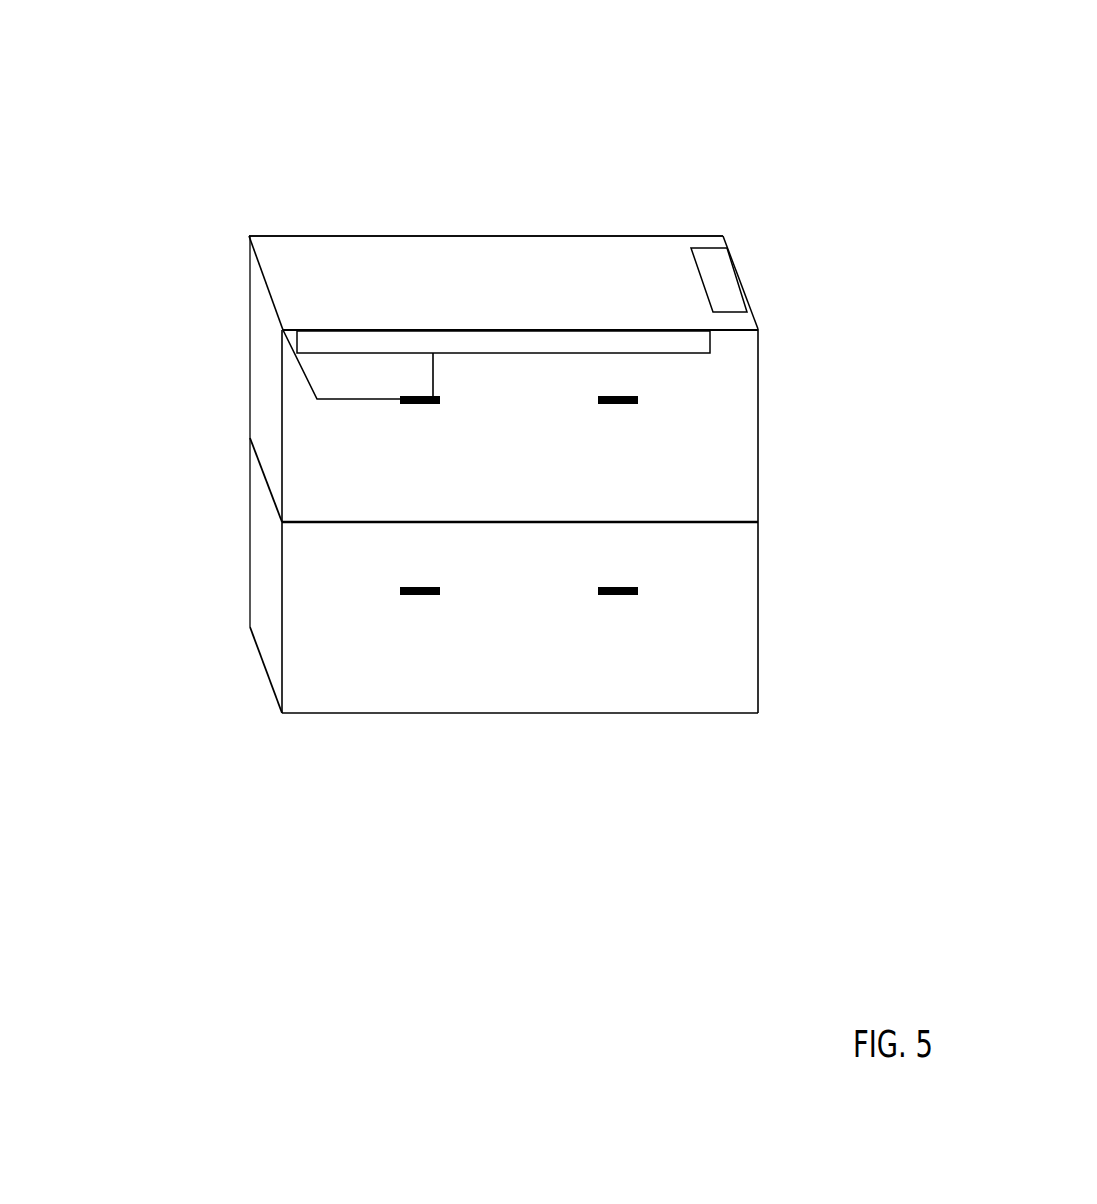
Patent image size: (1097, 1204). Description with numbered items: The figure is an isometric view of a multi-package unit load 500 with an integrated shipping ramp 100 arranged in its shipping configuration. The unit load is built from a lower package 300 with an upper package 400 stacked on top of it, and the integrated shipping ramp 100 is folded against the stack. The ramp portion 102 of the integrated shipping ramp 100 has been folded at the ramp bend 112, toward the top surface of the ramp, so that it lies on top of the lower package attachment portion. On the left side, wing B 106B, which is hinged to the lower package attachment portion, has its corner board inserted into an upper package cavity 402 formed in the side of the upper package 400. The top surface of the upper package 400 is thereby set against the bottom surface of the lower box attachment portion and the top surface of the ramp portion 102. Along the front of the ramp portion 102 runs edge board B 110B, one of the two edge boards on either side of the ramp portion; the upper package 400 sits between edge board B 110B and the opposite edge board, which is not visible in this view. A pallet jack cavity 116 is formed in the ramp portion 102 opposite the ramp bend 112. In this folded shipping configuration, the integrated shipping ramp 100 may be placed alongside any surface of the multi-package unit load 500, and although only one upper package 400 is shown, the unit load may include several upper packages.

The multi-package unit load 500 is at (960, 36).
The integrated shipping ramp 100 is at (352, 204).
The ramp portion 102 is at (536, 317).
The ramp bend 112 is at (190, 262).
The wing B 106B is at (205, 342).
The pallet jack cavity 116 is at (882, 209).
The edge board B 110B is at (835, 466).
The upper package 400 is at (535, 507).
The upper package cavity 402 is at (163, 547).
The lower package 300 is at (535, 697).